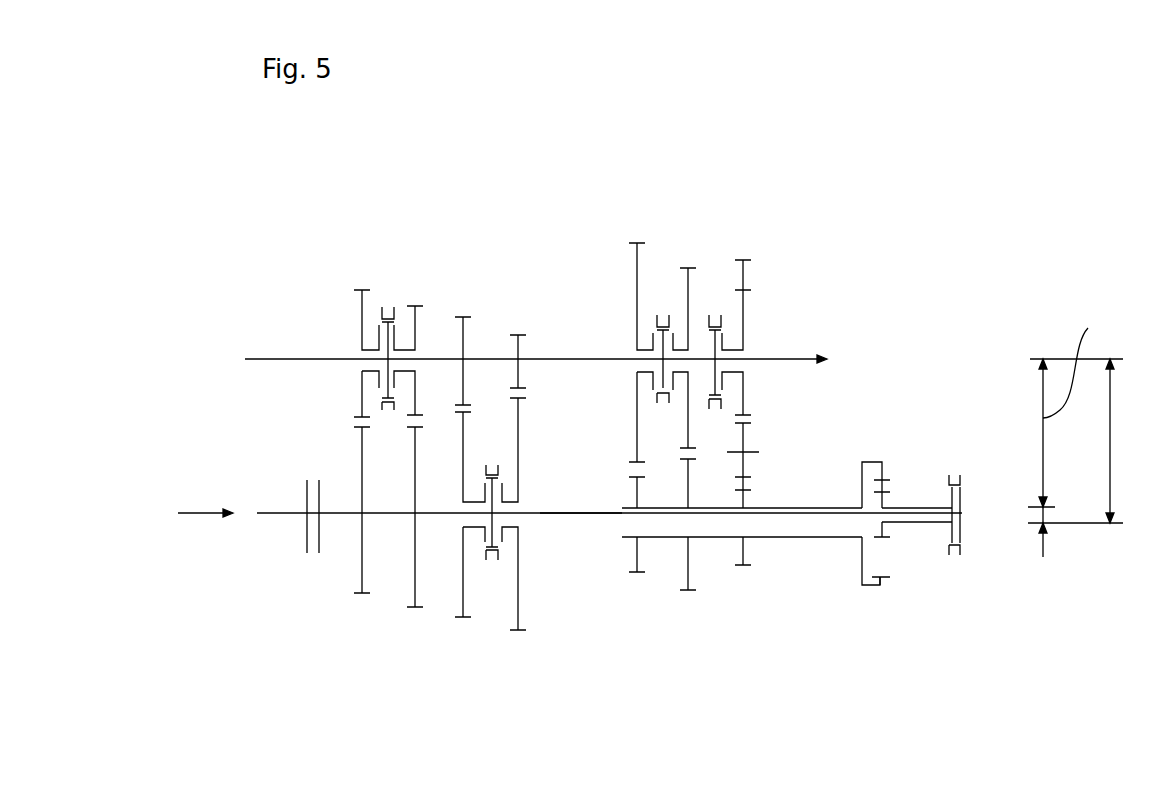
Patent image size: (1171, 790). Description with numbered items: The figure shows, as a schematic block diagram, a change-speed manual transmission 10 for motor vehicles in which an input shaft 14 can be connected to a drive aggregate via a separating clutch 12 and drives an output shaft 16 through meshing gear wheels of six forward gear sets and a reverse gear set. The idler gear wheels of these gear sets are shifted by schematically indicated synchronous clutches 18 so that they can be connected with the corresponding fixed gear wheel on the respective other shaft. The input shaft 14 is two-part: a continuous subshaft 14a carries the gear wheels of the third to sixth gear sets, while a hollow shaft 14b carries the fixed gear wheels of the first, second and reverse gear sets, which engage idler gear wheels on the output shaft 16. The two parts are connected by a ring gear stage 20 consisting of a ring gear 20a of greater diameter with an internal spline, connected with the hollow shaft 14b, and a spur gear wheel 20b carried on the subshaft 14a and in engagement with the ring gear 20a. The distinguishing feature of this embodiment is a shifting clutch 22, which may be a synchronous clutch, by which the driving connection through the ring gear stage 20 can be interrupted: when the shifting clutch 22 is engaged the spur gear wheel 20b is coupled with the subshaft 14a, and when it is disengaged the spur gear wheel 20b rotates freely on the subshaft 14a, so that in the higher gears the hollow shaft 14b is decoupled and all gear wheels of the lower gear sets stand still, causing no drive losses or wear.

The manual transmission 10 is at (787, 222).
The separating clutch 12 is at (307, 533).
The input shaft 14 is at (577, 497).
The subshaft 14a is at (585, 515).
The hollow shaft 14b is at (803, 538).
The output shaft 16 is at (580, 358).
The synchronous clutch 18 is at (388, 300).
The ring gear stage 20 is at (870, 456).
The ring gear 20a is at (870, 588).
The spur gear wheel 20b is at (882, 507).
The shifting clutch 22 is at (965, 475).